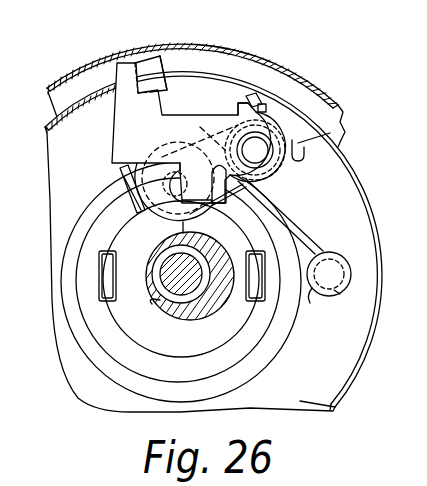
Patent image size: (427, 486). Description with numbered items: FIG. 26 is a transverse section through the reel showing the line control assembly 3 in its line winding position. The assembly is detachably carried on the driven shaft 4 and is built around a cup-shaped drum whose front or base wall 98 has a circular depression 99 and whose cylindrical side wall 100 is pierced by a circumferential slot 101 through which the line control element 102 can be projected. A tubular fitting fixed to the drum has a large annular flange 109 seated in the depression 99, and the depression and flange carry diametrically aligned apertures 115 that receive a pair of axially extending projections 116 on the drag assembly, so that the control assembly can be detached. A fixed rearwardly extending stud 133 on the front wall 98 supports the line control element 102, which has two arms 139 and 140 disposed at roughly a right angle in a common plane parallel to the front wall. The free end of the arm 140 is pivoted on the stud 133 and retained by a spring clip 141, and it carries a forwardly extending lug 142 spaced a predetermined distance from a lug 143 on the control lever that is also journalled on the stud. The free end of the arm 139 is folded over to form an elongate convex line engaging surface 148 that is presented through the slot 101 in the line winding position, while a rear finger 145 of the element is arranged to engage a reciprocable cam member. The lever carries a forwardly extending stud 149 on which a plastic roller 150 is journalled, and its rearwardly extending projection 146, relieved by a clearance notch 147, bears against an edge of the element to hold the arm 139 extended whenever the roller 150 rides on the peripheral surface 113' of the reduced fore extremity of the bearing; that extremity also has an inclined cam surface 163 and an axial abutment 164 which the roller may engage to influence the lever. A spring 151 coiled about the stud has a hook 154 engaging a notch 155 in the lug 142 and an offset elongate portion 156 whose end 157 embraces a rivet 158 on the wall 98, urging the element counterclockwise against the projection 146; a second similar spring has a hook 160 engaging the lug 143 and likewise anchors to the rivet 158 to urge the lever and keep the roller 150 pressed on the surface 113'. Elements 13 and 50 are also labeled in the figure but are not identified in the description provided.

The line control assembly 3 is at (103, 80).
The driven shaft 4 is at (166, 268).
The rim ring 13 is at (302, 81).
The ring end flange 50 is at (327, 97).
The front or base wall 98 is at (335, 385).
The circular depression 99 is at (130, 384).
The annular side wall 100 is at (349, 171).
The circumferential slot 101 is at (106, 91).
The line control element 102 is at (140, 62).
The annular flange 109 is at (201, 352).
The peripheral surface 113' is at (190, 285).
The apertures 115 is at (113, 296).
The axially extending projections 116 is at (107, 275).
The stud 133 is at (268, 158).
The arm 139 is at (118, 126).
The arm 140 is at (200, 117).
The spring clip 141 is at (262, 175).
The lug 142 is at (236, 104).
The lug 143 is at (330, 133).
The rear finger 145 is at (206, 207).
The rearwardly extending projection 146 is at (119, 178).
The notch 147 is at (124, 190).
The line engaging surface 148 is at (164, 64).
The stud 149 is at (160, 172).
The roller 150 is at (160, 215).
The spring 151 is at (326, 251).
The hook 154 is at (253, 94).
The notch 155 is at (262, 102).
The offset elongate portion 156 is at (311, 238).
The end 157 is at (338, 294).
The rivet 158 is at (311, 300).
The hook 160 is at (302, 152).
The inclined cam surface 163 is at (151, 303).
The axial abutment 164 is at (178, 234).